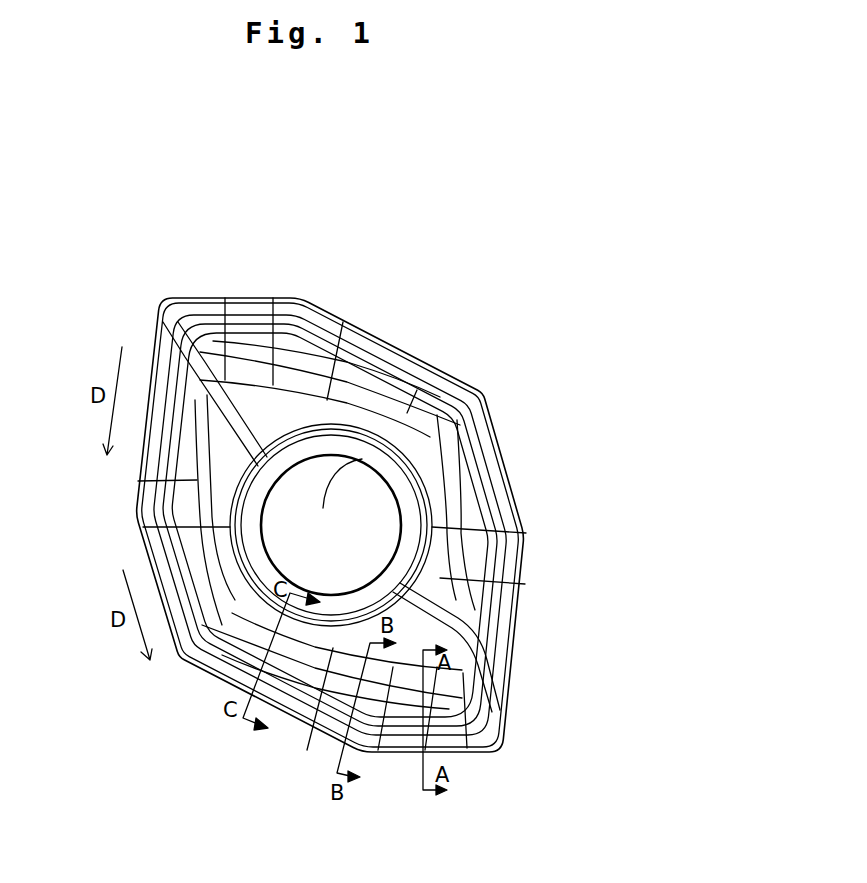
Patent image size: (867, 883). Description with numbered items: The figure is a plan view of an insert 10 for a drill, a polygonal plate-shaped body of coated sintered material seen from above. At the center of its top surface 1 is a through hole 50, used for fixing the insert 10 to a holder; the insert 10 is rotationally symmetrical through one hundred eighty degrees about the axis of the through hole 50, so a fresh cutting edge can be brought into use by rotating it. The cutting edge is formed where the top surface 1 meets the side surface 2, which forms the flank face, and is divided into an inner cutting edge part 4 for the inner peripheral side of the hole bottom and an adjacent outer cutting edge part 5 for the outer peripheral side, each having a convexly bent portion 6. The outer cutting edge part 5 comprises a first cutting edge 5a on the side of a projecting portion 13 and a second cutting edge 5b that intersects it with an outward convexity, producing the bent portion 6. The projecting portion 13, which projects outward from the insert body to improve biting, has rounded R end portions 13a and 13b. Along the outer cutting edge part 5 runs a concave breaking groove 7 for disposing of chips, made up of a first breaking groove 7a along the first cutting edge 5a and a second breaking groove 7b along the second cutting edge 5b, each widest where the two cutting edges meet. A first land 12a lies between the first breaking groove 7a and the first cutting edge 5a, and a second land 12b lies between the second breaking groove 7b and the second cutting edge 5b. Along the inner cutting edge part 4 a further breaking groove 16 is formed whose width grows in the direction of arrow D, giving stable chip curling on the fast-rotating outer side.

The insert 10 is at (541, 287).
The top surface 1 is at (437, 588).
The side surface 2 is at (523, 613).
The inner cutting edge part 4 is at (505, 468).
The outer cutting edge part 5 is at (500, 302).
The first cutting edge 5a is at (507, 806).
The second cutting edge 5b is at (318, 806).
The bent portion 6 is at (333, 318).
The breaking groove 7 is at (380, 363).
The first breaking groove 7a is at (400, 712).
The second breaking groove 7b is at (287, 672).
The first land 12a is at (467, 753).
The second land 12b is at (222, 683).
The projecting portion 13 is at (226, 292).
The R end portion 13a is at (166, 298).
The R end portion 13b is at (306, 300).
The breaking groove (third breaking groove) 16 is at (177, 357).
The through hole 50 is at (365, 460).